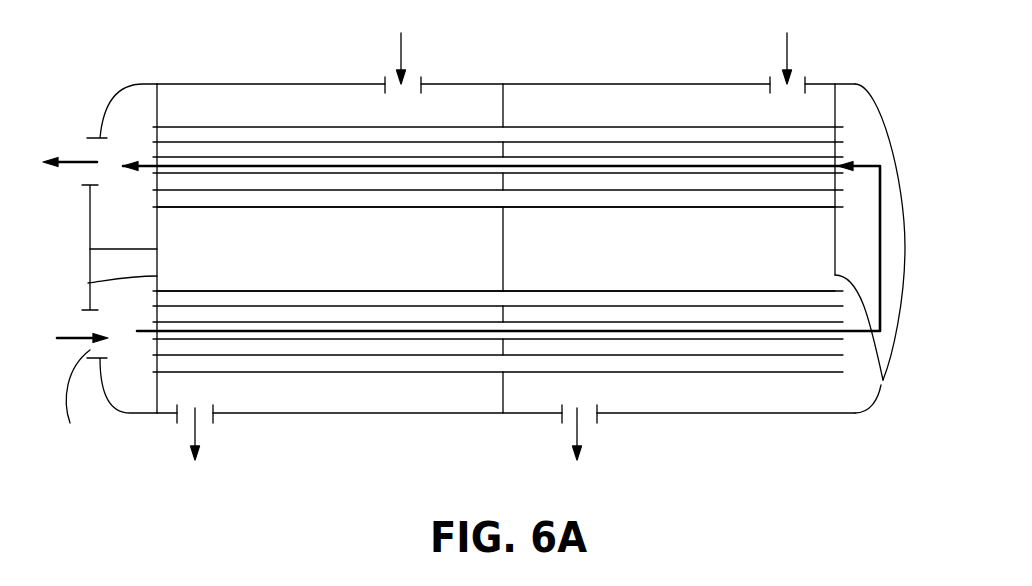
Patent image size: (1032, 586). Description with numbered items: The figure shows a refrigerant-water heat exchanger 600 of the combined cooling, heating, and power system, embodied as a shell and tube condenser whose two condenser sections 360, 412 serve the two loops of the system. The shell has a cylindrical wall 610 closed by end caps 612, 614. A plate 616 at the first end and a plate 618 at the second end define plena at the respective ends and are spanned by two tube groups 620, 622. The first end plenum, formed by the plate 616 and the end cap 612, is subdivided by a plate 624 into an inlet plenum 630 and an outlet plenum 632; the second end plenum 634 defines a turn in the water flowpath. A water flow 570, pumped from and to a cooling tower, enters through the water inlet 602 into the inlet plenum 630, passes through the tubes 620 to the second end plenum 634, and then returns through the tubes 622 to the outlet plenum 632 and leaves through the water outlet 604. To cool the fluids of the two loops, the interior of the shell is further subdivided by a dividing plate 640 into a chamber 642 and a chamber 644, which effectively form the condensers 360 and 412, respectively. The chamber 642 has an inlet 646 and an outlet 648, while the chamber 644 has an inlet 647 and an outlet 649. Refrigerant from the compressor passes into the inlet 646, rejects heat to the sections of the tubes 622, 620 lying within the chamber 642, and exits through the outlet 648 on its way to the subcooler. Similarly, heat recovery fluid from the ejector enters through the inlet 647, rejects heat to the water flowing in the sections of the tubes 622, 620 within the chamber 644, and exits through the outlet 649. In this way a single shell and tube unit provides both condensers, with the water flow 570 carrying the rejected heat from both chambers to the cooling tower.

The refrigerant-water heat exchanger 600 is at (475, 269).
The condenser section 360 is at (471, 254).
The condenser section 412 is at (870, 266).
The water flow 570 is at (57, 338).
The water inlet 602 is at (73, 402).
The water outlet 604 is at (85, 151).
The cylindrical wall 610 is at (713, 413).
The end cap 612 is at (86, 233).
The end cap 614 is at (880, 390).
The plate 616 is at (88, 283).
The plate 618 is at (883, 380).
The tube group 620 is at (344, 364).
The tube group 622 is at (591, 129).
The plate 624 is at (117, 248).
The inlet plenum 630 is at (135, 387).
The outlet plenum 632 is at (133, 108).
The second end plenum 634 is at (862, 113).
The dividing plate 640 is at (503, 98).
The chamber 642 is at (315, 209).
The chamber 644 is at (679, 231).
The inlet 646 is at (415, 78).
The inlet 647 is at (801, 76).
The outlet 648 is at (209, 427).
The outlet 649 is at (588, 421).